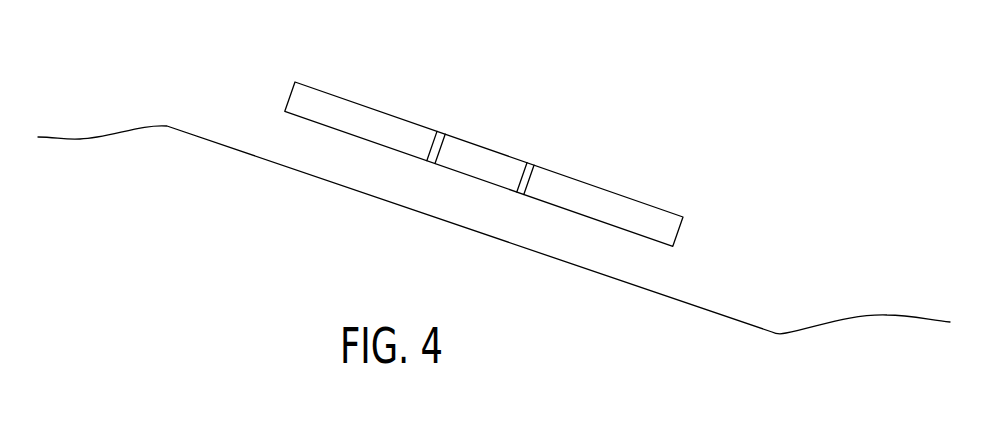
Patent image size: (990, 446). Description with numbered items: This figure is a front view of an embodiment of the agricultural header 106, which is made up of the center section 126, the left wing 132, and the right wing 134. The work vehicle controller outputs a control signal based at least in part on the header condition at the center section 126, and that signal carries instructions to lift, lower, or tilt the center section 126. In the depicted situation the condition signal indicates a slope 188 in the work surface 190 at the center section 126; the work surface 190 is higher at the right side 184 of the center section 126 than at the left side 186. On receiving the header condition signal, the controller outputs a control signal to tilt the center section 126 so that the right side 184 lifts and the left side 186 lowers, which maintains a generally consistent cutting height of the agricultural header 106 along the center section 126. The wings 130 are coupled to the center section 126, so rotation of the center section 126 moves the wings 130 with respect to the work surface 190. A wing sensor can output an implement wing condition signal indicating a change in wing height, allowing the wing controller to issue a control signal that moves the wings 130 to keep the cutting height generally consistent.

The agricultural header 106 is at (550, 73).
The center section 126 is at (500, 162).
The wings 130 is at (489, 149).
The left wing 132 is at (658, 217).
The right wing 134 is at (342, 117).
The right side 184 is at (465, 157).
The left side 186 is at (530, 158).
The slope 188 is at (381, 199).
The work surface 190 is at (707, 342).